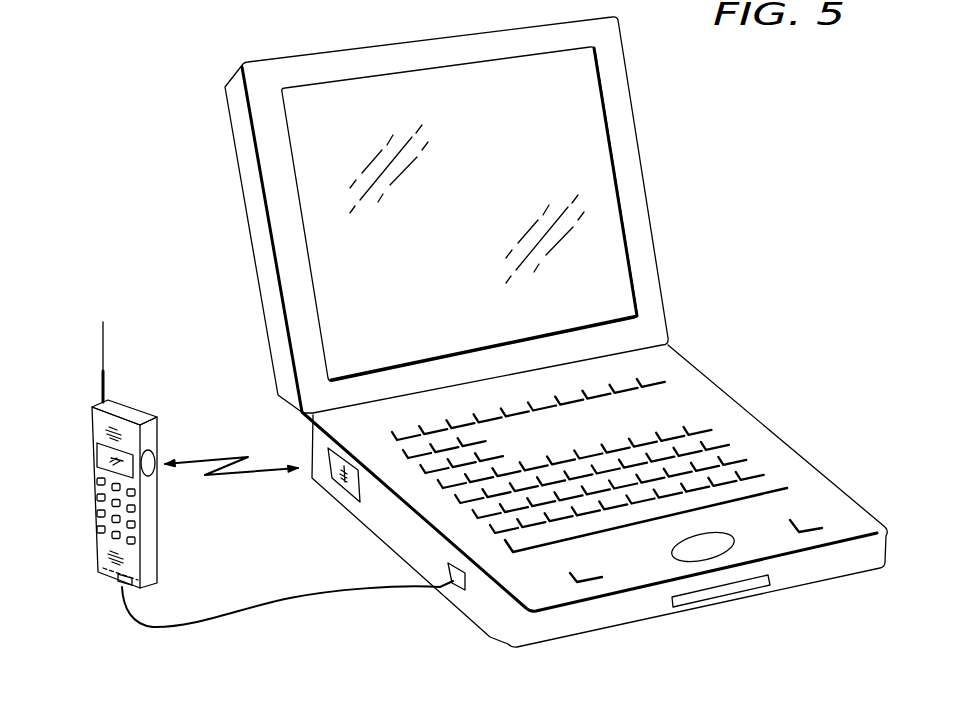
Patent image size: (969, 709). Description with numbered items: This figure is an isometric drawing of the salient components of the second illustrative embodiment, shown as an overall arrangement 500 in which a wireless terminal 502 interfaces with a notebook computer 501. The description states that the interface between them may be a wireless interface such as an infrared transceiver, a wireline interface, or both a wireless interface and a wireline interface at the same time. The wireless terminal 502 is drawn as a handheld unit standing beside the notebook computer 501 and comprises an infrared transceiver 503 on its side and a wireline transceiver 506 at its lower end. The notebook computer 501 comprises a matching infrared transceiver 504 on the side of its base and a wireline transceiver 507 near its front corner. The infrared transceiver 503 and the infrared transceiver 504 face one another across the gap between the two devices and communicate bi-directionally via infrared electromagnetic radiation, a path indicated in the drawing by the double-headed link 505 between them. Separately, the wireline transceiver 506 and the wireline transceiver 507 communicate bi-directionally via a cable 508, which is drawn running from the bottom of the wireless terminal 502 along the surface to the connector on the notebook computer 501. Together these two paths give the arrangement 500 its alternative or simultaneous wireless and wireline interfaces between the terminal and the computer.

The wireless communication system 500 is at (793, 65).
The notebook computer 501 is at (752, 410).
The wireless terminal 502 is at (98, 403).
The infrared transceiver 503 is at (153, 452).
The infrared transceiver 504 is at (348, 487).
The wireless link 505 is at (207, 476).
The wireline transceiver 506 is at (118, 579).
The wireline transceiver 507 is at (455, 589).
The cable 508 is at (265, 604).